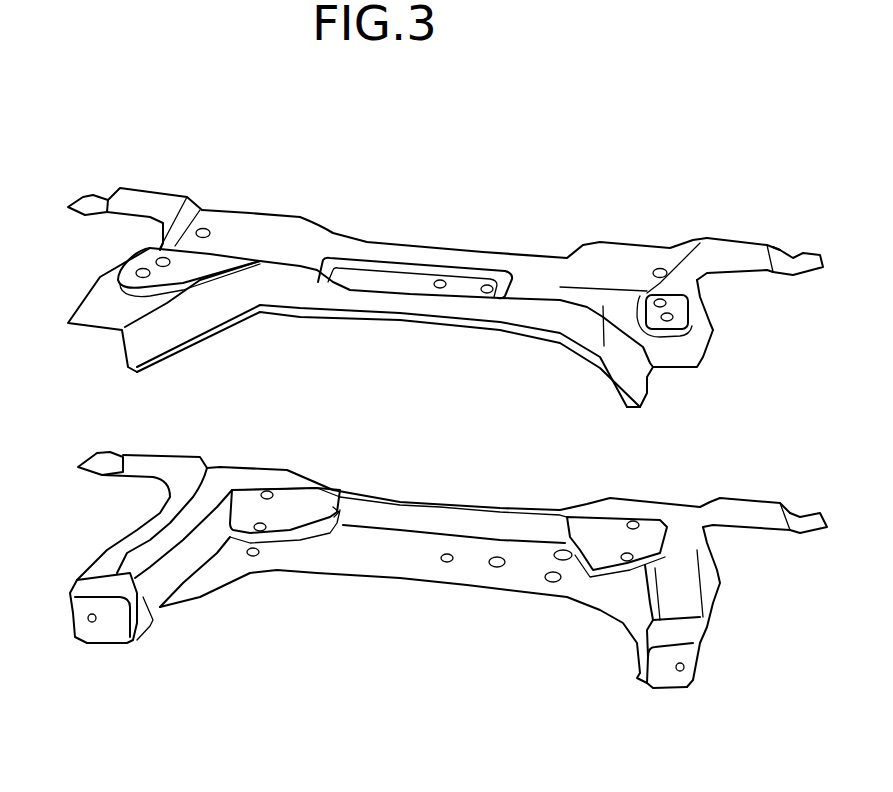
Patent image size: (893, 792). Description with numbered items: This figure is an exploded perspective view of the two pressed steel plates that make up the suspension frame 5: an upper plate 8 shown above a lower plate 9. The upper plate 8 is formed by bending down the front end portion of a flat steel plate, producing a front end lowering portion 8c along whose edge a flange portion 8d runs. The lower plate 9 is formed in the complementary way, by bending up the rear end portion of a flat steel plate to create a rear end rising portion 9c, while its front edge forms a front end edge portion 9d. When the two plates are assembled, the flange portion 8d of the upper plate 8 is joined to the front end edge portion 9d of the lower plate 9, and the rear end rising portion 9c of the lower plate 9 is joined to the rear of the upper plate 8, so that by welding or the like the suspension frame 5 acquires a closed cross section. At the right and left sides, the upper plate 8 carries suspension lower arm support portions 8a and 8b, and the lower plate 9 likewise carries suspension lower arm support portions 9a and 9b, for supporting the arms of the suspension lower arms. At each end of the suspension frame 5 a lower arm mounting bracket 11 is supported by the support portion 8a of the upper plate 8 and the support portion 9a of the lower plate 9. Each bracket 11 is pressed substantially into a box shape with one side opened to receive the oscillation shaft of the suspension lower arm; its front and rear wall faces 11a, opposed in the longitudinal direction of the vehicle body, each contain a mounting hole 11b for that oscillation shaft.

The suspension frame 5 is at (407, 171).
The upper plate 8 is at (610, 262).
The suspension lower arm support portion 8a is at (100, 315).
The suspension lower arm support portion 8b is at (157, 200).
The front end lowering portion 8c is at (377, 303).
The flange portion 8d is at (517, 333).
The lower plate 9 is at (713, 587).
The suspension lower arm support portion 9a is at (162, 613).
The suspension lower arm support portion 9b is at (170, 465).
The rear end rising portion 9c is at (492, 525).
The front end edge portion 9d is at (390, 570).
The lower arm mounting bracket 11 is at (87, 583).
The front and rear wall faces 11a is at (113, 640).
The mounting hole 11b is at (92, 620).